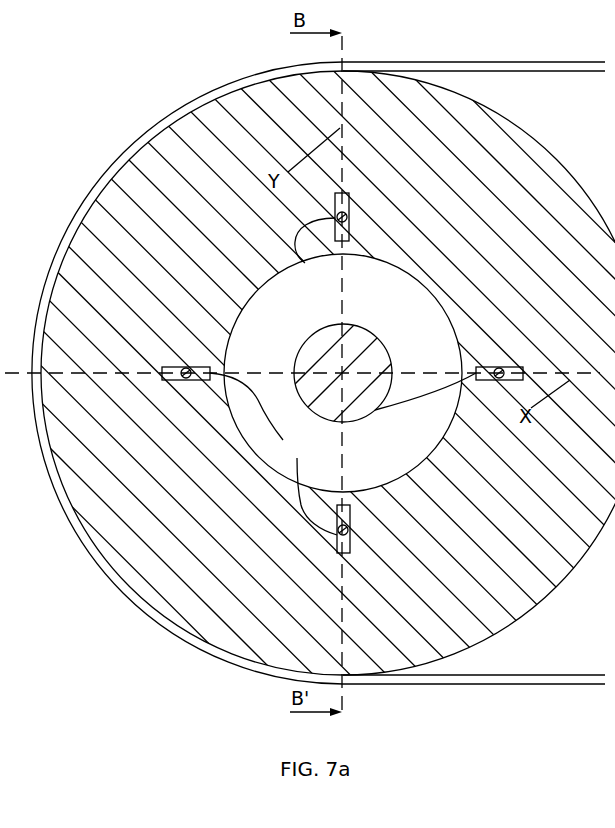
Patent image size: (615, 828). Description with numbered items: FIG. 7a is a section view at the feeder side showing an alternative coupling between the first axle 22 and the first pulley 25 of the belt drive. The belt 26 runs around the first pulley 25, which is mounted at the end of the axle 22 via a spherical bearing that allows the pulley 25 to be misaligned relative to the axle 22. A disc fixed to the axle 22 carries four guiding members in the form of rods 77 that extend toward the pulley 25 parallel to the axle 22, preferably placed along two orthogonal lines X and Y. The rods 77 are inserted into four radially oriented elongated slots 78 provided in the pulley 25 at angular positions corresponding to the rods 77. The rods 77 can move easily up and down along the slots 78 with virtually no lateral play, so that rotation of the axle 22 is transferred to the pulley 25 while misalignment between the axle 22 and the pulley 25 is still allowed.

The first axle 22 is at (308, 362).
The first pulley 25 is at (520, 157).
The belt 26 is at (467, 68).
The rods 77 is at (290, 246).
The slots 78 is at (476, 370).